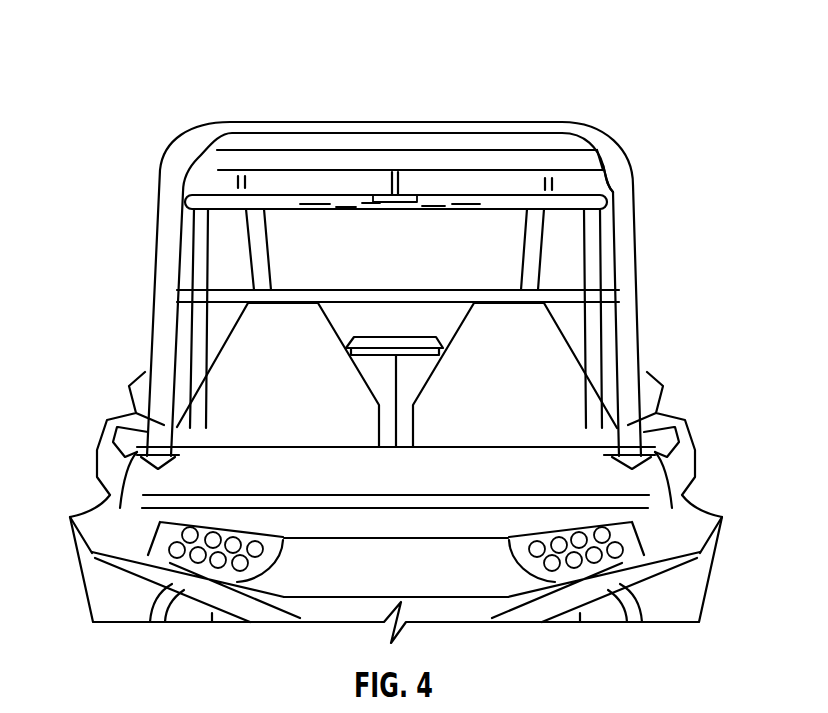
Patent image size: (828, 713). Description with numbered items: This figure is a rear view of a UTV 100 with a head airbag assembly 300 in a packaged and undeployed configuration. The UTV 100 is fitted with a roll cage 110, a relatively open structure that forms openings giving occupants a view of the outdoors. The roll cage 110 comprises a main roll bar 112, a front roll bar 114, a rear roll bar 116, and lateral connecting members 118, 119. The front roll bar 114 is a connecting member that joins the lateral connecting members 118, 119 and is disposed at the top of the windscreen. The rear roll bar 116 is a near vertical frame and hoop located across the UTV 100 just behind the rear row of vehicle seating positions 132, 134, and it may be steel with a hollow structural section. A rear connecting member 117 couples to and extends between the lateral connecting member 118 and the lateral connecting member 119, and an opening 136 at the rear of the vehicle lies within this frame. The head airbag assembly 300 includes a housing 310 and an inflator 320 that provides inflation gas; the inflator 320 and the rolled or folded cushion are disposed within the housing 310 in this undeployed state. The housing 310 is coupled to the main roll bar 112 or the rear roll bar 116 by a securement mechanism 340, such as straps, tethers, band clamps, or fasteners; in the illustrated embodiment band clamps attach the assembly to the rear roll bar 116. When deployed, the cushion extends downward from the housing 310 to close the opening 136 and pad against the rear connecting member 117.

The UTV 100 is at (146, 48).
The roll cage 110 is at (132, 282).
The main roll bar 112 is at (205, 262).
The front roll bar 114 is at (548, 134).
The rear roll bar 116 is at (600, 183).
The rear connecting member 117 is at (594, 292).
The lateral connecting member 118 is at (208, 130).
The lateral connecting member 119 is at (599, 148).
The vehicle seating position 132 is at (240, 378).
The vehicle seating position 134 is at (559, 378).
The opening 136 is at (297, 265).
The head airbag assembly 300 is at (211, 184).
The housing 310 is at (599, 200).
The inflator 320 is at (383, 203).
The securement mechanism 340 is at (243, 172).